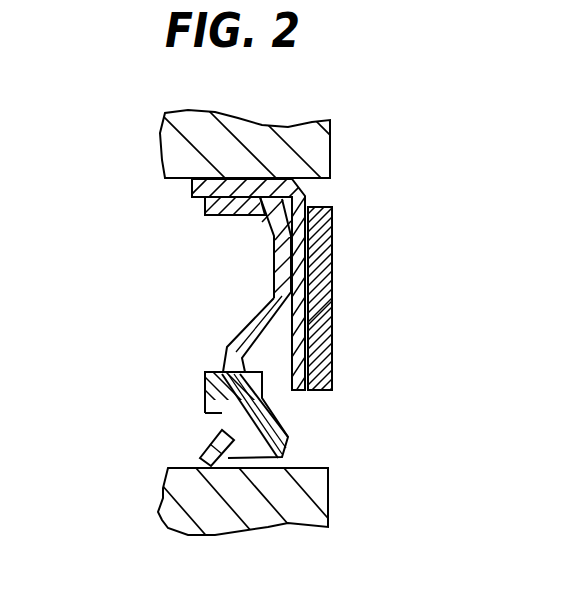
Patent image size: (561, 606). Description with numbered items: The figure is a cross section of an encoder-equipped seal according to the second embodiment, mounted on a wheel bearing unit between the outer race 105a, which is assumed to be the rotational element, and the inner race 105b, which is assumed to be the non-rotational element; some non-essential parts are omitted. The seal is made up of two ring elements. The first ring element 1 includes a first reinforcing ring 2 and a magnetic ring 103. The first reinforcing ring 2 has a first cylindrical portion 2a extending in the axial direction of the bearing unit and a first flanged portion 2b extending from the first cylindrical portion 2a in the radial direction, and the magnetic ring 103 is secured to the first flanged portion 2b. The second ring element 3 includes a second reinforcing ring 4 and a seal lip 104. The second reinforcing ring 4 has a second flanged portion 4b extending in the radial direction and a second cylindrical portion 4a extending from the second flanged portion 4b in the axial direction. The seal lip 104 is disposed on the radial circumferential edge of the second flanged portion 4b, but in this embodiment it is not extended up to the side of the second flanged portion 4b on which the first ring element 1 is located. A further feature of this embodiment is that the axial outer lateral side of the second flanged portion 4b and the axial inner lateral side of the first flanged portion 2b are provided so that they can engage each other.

The first ring element 1 is at (266, 277).
The first reinforcing ring 2 is at (346, 251).
The first cylindrical portion 2a is at (290, 178).
The first flanged portion 2b is at (373, 301).
The second ring element 3 is at (198, 335).
The second reinforcing ring 4 is at (158, 247).
The second cylindrical portion 4a is at (205, 213).
The second flanged portion 4b is at (73, 208).
The magnetic ring 103 is at (322, 316).
The seal lip 104 is at (225, 438).
The outer race 105a is at (190, 154).
The inner race 105b is at (187, 490).